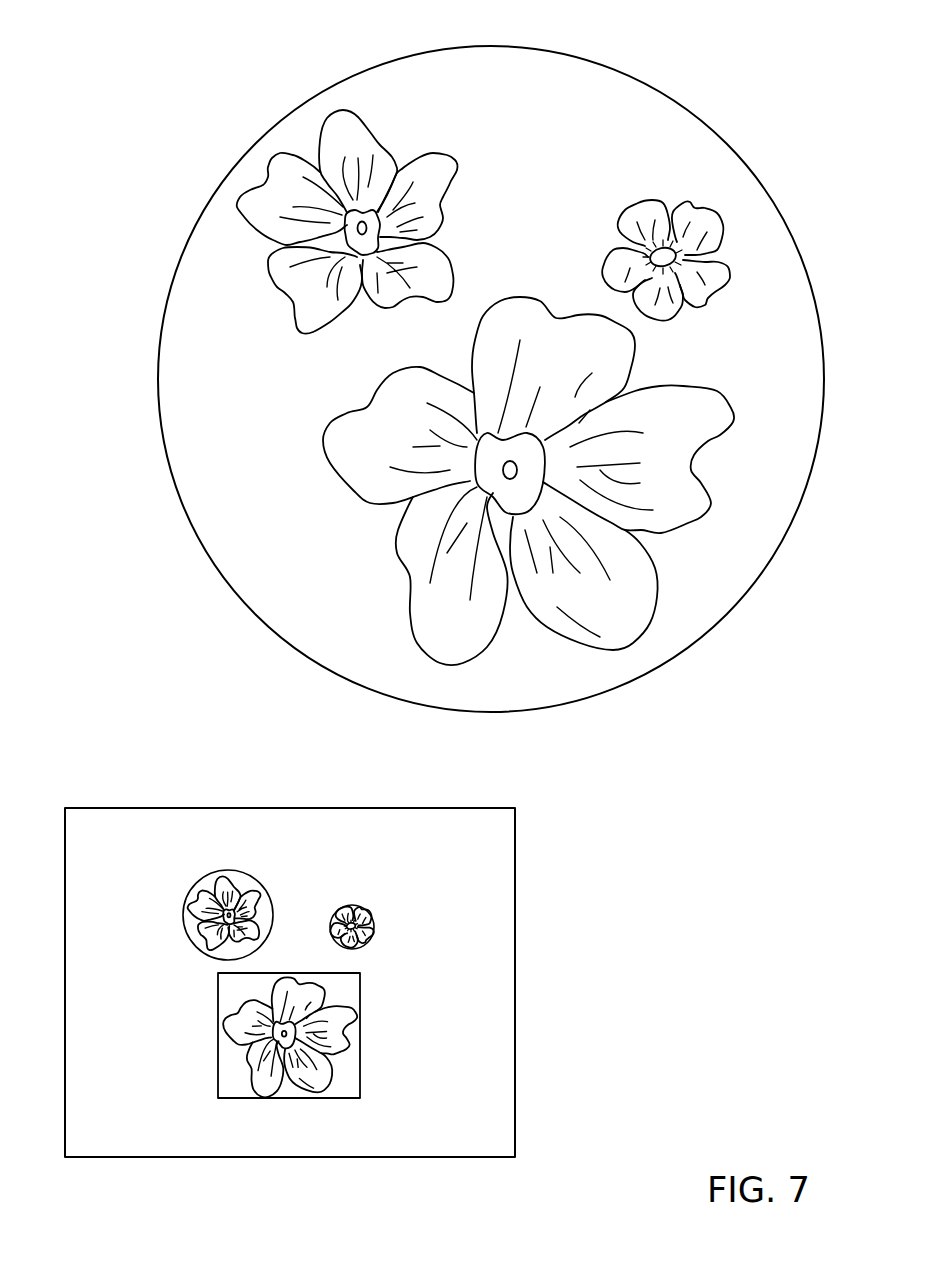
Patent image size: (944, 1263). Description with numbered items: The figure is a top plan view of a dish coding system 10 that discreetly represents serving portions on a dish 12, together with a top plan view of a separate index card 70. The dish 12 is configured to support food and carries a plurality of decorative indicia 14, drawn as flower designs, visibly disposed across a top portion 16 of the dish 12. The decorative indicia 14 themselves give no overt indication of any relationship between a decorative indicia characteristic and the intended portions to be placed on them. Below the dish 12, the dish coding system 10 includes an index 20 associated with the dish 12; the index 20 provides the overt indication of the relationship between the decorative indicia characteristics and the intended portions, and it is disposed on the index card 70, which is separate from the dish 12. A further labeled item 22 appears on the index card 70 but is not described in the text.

The dish coding system 10 is at (483, 368).
The dish 12 is at (740, 153).
The decorative indicia 14 is at (323, 458).
The top portion 16 is at (535, 143).
The index 20 is at (181, 969).
The meat portion indicator 22 is at (468, 1022).
The index card 70 is at (327, 982).